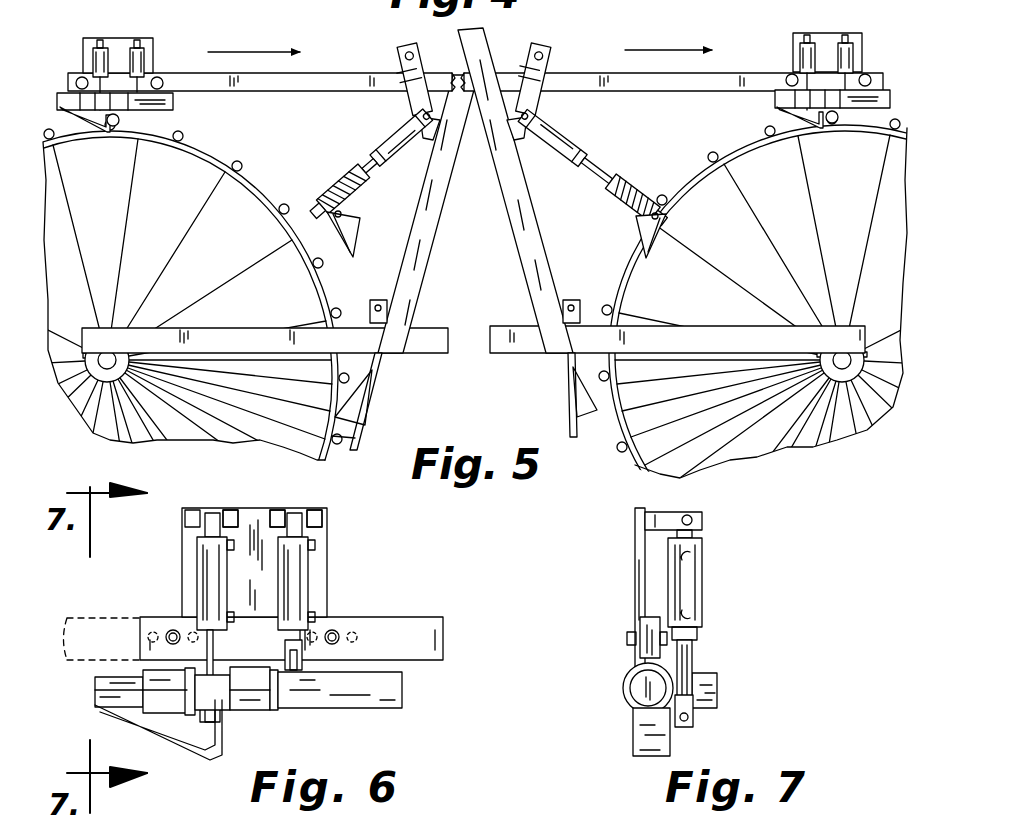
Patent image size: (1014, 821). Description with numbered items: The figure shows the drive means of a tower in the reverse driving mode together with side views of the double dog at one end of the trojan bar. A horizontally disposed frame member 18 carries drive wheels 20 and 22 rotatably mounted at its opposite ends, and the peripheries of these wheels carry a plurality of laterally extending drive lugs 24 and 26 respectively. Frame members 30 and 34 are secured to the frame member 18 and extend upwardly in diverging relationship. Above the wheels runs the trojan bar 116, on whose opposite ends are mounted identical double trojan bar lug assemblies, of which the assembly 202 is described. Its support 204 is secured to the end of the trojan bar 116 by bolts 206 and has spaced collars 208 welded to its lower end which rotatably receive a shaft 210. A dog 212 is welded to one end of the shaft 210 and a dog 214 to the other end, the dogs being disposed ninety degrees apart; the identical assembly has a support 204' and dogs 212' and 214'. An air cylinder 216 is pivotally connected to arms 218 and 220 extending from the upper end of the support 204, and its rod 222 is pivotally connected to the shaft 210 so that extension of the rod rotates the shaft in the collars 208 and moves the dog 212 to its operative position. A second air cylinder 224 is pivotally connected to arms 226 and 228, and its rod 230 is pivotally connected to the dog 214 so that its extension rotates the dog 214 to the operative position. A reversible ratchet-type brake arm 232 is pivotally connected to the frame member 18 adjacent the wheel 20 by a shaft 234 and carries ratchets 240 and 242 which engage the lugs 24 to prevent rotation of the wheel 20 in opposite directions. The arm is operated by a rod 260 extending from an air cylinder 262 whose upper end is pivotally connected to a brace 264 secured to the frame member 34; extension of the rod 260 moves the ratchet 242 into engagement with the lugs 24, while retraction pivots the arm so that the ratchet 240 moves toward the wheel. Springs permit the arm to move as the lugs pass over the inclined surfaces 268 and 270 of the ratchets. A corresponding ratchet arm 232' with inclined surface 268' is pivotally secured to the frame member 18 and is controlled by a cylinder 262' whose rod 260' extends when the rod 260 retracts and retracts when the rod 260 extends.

In FIG. 5, the frame member 18 is at (248, 353).
In FIG. 5, the drive wheel 20 is at (323, 296).
In FIG. 5, the drive wheel 22 is at (633, 460).
In FIG. 5, the drive lugs 24 is at (183, 134).
In FIG. 5, the drive lugs 26 is at (765, 129).
In FIG. 5, the frame member 30 is at (528, 263).
In FIG. 5, the frame member 34 is at (422, 275).
In FIG. 5, the trojan bar 116 is at (332, 73).
In FIG. 6, the trojan bar 116 is at (433, 627).
In FIG. 7, the trojan bar 116 is at (627, 623).
In FIG. 5, the double trojan bar lug assembly 202 is at (145, 22).
In FIG. 6, the double trojan bar lug assembly 202 is at (356, 530).
In FIG. 7, the double trojan bar lug assembly 202 is at (722, 530).
In FIG. 5, the support 204 is at (94, 57).
In FIG. 6, the support 204 is at (366, 592).
In FIG. 7, the support 204 is at (605, 589).
In FIG. 5, the support 204' is at (797, 59).
In FIG. 5, the bolts 206 is at (473, 81).
In FIG. 6, the bolts 206 is at (170, 630).
In FIG. 7, the bolts 206 is at (627, 643).
In FIG. 6, the collars 208 is at (153, 707).
In FIG. 6, the shaft 210 is at (95, 693).
In FIG. 5, the dog 212 is at (89, 150).
In FIG. 6, the dog 212 is at (158, 734).
In FIG. 7, the dog 212 is at (614, 709).
In FIG. 5, the dog 212' is at (799, 152).
In FIG. 5, the dog 214 is at (124, 143).
In FIG. 6, the dog 214 is at (378, 695).
In FIG. 7, the dog 214 is at (746, 690).
In FIG. 5, the dog 214' is at (832, 144).
In FIG. 6, the air cylinder 216 is at (205, 568).
In FIG. 7, the air cylinder 216 is at (692, 578).
In FIG. 6, the arm 218 is at (191, 507).
In FIG. 7, the arm 218 is at (660, 513).
In FIG. 6, the arm 220 is at (234, 507).
In FIG. 6, the rod 222 is at (212, 670).
In FIG. 7, the rod 222 is at (668, 680).
In FIG. 6, the air cylinder 224 is at (310, 568).
In FIG. 6, the arm 226 is at (280, 507).
In FIG. 6, the arm 228 is at (316, 507).
In FIG. 6, the rod 230 is at (307, 637).
In FIG. 5, the ratchet arm 232 is at (400, 321).
In FIG. 5, the ratchet arm 232' is at (545, 325).
In FIG. 5, the shaft 234 is at (388, 308).
In FIG. 5, the ratchet 240 is at (330, 432).
In FIG. 5, the ratchet 242 is at (326, 216).
In FIG. 5, the rod 260 is at (367, 165).
In FIG. 5, the rod 260' is at (593, 167).
In FIG. 5, the air cylinder 262 is at (383, 85).
In FIG. 5, the air cylinder 262' is at (573, 86).
In FIG. 5, the brace 264 is at (445, 133).
In FIG. 5, the inclined surface 268 is at (309, 400).
In FIG. 5, the inclined surface 268' is at (631, 402).
In FIG. 5, the inclined surface 270 is at (338, 240).